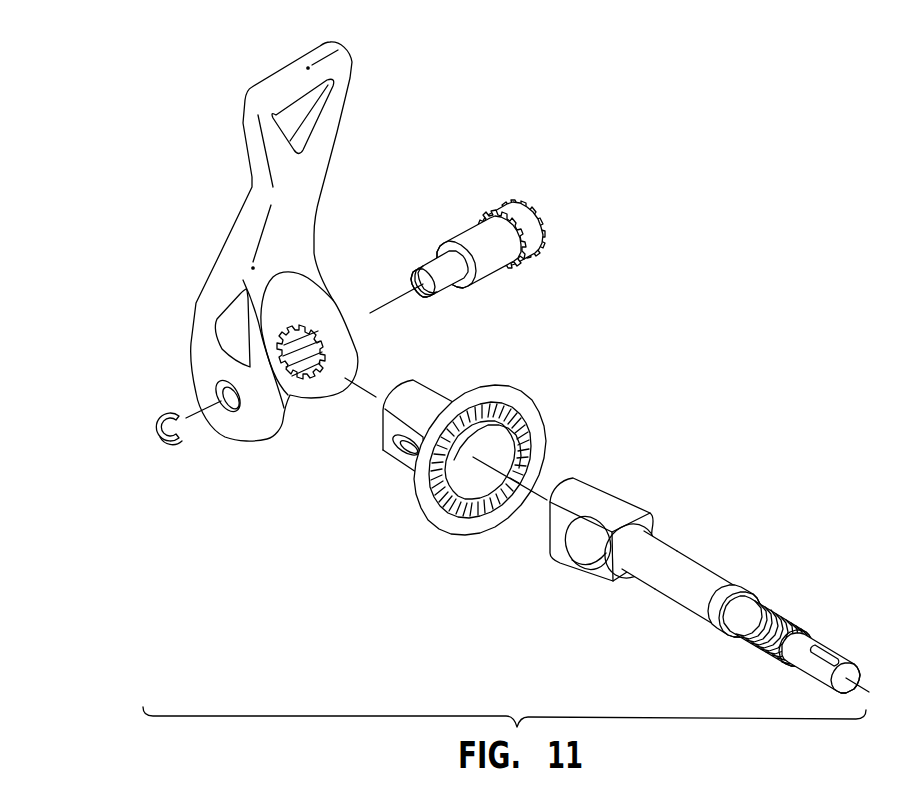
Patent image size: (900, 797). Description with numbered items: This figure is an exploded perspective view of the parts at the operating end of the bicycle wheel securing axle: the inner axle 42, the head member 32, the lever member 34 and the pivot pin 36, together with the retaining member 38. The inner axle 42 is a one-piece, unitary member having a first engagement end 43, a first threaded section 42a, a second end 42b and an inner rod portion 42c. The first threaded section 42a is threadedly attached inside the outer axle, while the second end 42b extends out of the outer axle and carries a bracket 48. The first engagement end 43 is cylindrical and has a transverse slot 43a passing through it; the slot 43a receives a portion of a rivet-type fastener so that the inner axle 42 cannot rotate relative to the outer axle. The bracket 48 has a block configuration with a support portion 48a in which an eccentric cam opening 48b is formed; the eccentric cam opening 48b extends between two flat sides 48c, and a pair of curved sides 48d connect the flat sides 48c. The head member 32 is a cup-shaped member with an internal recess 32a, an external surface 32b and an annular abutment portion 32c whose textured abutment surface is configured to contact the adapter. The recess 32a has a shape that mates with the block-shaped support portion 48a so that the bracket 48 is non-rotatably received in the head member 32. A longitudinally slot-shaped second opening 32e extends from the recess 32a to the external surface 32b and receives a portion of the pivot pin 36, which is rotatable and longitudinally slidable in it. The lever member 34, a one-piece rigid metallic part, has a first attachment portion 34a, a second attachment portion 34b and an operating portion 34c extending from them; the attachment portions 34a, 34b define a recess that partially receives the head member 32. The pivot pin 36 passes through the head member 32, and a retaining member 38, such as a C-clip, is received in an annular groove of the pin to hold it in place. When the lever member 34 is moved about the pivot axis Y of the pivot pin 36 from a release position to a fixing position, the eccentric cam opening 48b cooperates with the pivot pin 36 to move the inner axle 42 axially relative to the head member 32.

The head member 32 is at (466, 451).
The internal recess 32a is at (470, 462).
The external surface 32b is at (390, 405).
The annular abutment portion 32c is at (488, 390).
The second opening 32e is at (400, 442).
The lever member 34 is at (327, 262).
The first attachment portion 34a is at (328, 303).
The second attachment portion 34b is at (237, 427).
The operating portion 34c is at (323, 137).
The pivot pin 36 is at (515, 167).
The retaining member 38 is at (177, 445).
The inner axle 42 is at (743, 623).
The first threaded section 42a is at (760, 655).
The second end 42b is at (641, 570).
The inner rod portion 42c is at (707, 585).
The first engagement end 43 is at (828, 662).
The slot 43a is at (823, 653).
The bracket 48 is at (592, 545).
The support portion 48a is at (622, 568).
The eccentric cam opening 48b is at (588, 573).
The flat sides 48c is at (551, 518).
The curved sides 48d is at (585, 492).
The pivot axis Y is at (392, 298).